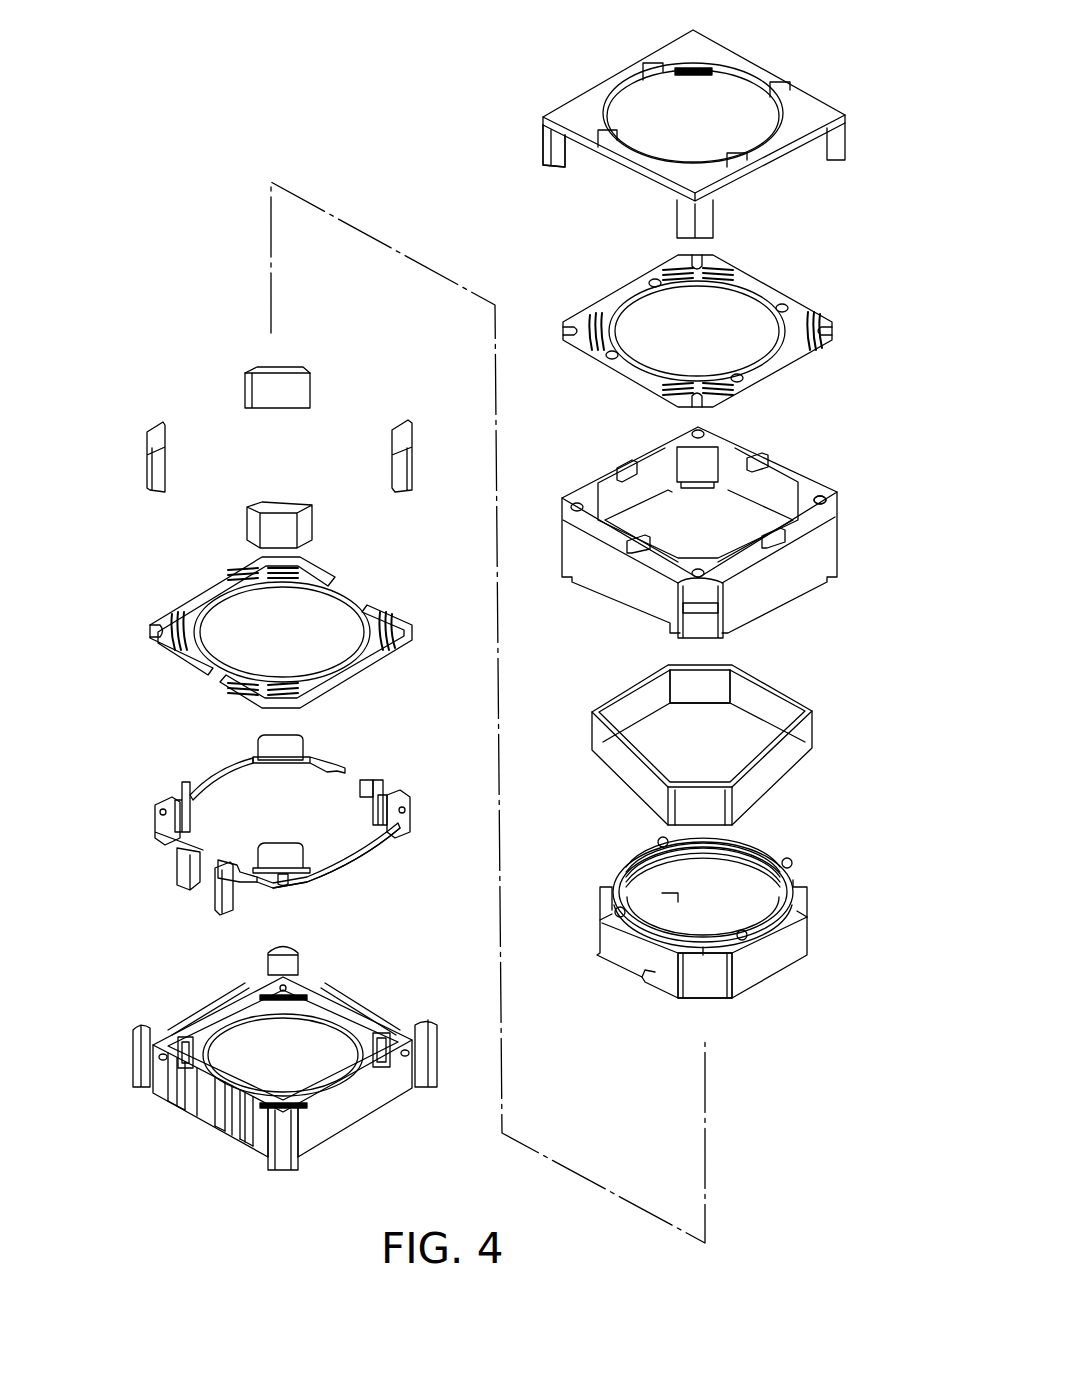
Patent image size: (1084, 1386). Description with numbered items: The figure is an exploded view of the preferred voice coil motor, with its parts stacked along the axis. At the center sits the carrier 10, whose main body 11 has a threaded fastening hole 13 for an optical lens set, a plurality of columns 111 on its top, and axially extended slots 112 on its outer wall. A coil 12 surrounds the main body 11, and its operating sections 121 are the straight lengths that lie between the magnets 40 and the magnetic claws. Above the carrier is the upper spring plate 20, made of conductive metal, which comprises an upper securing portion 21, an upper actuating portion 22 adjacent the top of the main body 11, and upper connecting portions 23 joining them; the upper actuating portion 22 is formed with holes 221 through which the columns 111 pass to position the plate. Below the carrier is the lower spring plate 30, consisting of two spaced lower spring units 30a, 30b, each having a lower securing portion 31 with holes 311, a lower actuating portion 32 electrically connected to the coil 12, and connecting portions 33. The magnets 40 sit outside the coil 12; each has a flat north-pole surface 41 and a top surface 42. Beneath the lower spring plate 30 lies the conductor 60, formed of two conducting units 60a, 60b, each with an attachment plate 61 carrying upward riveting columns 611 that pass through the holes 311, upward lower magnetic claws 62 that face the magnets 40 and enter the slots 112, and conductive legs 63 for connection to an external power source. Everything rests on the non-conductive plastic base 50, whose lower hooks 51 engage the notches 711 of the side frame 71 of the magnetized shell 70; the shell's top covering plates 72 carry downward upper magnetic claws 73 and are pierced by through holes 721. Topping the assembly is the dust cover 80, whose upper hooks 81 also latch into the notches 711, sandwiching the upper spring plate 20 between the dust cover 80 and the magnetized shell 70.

The carrier 10 is at (746, 946).
The main body 11 is at (780, 960).
The columns 111 is at (794, 863).
The axially extended slots 112 is at (715, 980).
The coil 12 is at (746, 745).
The operating sections 121 is at (808, 724).
The fastening hole 13 is at (690, 915).
The upper spring plate 20 is at (724, 298).
The upper securing portion 21 is at (745, 275).
The upper actuating portion 22 is at (752, 296).
The upper connecting portions 23 is at (800, 312).
The holes 221 is at (652, 280).
The lower spring plate 30 is at (280, 637).
The lower spring unit 30a is at (335, 577).
The lower spring unit 30b is at (393, 612).
The lower securing portion 31 is at (212, 592).
The holes 311 is at (156, 630).
The lower actuating portion 32 is at (218, 609).
The connecting portions 33 is at (192, 636).
The magnets 40 is at (279, 429).
The north-pole surface 41 is at (290, 392).
The top surface 42 is at (287, 370).
The base 50 is at (277, 1064).
The lower hooks 51 is at (150, 1042).
The conductor 60 is at (291, 840).
The conducting unit 60a is at (325, 754).
The conducting unit 60b is at (405, 825).
The attachment plate 61 is at (352, 858).
The riveting columns 611 is at (290, 884).
The lower magnetic claws 62 is at (287, 842).
The conductive legs 63 is at (222, 899).
The magnetized shell 70 is at (740, 526).
The side frame 71 is at (770, 584).
The notches 711 is at (705, 608).
The top covering plates 72 is at (808, 490).
The through holes 721 is at (835, 478).
The upper magnetic claws 73 is at (705, 455).
The dust cover 80 is at (512, 120).
The upper hooks 81 is at (546, 150).